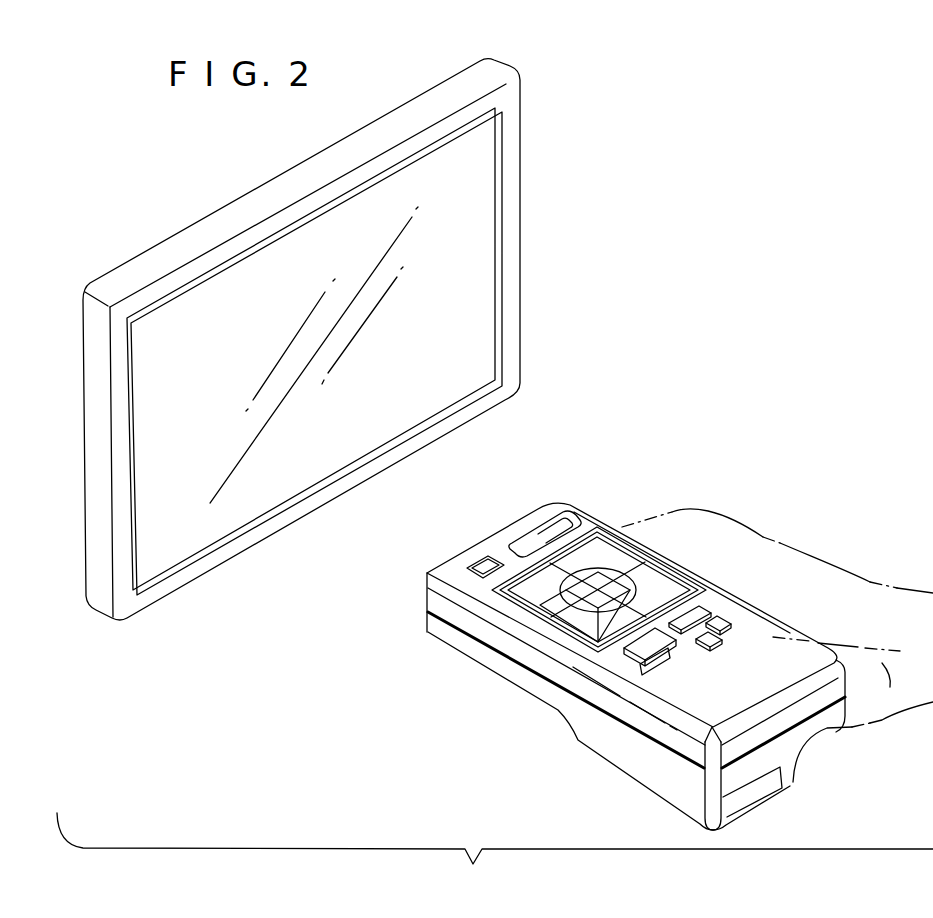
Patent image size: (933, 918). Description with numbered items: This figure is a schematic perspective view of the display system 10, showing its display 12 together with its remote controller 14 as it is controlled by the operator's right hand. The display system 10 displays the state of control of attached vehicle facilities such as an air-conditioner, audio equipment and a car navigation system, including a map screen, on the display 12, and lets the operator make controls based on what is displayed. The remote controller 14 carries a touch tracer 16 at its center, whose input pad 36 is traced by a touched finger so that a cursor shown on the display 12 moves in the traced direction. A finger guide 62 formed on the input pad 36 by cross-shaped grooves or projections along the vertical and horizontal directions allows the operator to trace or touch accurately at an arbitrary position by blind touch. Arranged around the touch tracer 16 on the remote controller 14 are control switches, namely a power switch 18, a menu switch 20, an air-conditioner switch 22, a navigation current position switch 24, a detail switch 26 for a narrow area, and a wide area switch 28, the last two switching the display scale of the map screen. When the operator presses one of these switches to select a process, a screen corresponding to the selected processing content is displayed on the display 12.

The display system 10 is at (698, 151).
The display 12 is at (521, 183).
The remote controller 14 is at (727, 496).
The touch tracer 16 is at (537, 627).
The power switch 18 is at (477, 562).
The menu switch 20 is at (555, 524).
The air-conditioner switch 22 is at (652, 643).
The navigation current position switch 24 is at (698, 617).
The detail switch 26 is at (702, 650).
The wide area switch 28 is at (660, 550).
The input pad 36 is at (527, 598).
The finger guide 62 is at (580, 617).